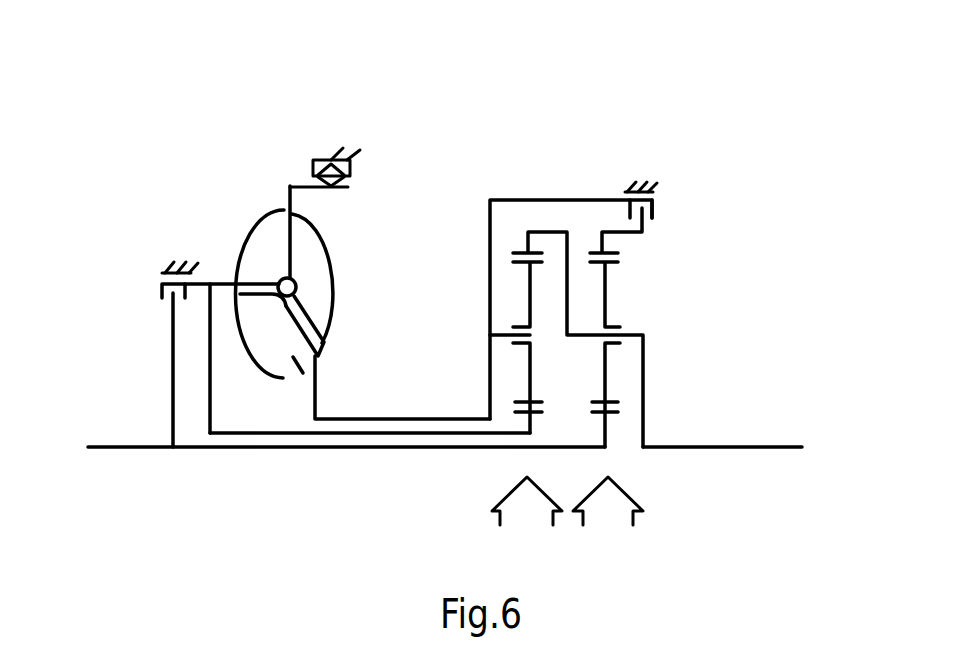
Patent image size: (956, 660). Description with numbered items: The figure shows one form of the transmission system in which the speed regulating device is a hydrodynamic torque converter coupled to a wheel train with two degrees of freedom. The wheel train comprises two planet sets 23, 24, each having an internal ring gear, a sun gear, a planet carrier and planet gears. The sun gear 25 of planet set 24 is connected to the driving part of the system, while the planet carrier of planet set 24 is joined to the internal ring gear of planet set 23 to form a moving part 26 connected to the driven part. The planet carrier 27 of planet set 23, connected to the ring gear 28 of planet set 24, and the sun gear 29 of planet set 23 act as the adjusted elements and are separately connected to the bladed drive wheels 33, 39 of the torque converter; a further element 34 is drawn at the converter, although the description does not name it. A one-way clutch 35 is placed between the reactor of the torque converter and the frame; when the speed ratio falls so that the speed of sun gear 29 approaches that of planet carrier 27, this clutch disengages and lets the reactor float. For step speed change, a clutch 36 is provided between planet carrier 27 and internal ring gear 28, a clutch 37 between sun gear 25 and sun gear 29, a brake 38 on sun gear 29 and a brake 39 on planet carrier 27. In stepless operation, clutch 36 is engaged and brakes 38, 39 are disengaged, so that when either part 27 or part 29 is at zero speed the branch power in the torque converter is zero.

The planet set 23 is at (527, 502).
The planet set 24 is at (608, 502).
The sun gear 25 is at (214, 450).
The moving part 26 is at (782, 449).
The planet carrier 27 is at (489, 297).
The internal ring gear 28 is at (618, 233).
The sun gear 29 is at (428, 434).
The bladed drive wheel 33 is at (255, 248).
The gear arm 34 is at (282, 378).
The one-way clutch 35 is at (327, 158).
The clutch 36 is at (655, 203).
The clutch 37 is at (160, 297).
The brake 38 is at (167, 264).
The brake 39 is at (645, 187).